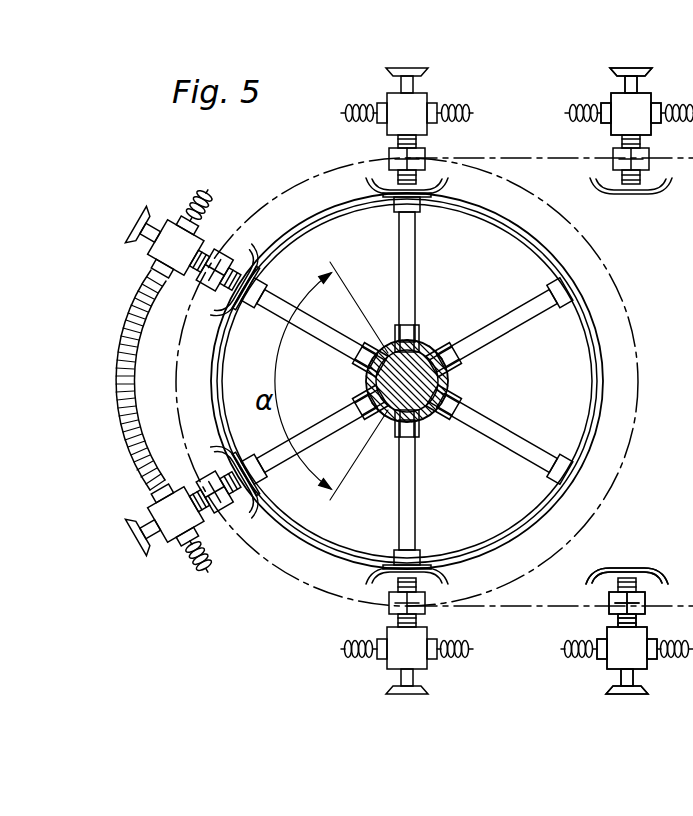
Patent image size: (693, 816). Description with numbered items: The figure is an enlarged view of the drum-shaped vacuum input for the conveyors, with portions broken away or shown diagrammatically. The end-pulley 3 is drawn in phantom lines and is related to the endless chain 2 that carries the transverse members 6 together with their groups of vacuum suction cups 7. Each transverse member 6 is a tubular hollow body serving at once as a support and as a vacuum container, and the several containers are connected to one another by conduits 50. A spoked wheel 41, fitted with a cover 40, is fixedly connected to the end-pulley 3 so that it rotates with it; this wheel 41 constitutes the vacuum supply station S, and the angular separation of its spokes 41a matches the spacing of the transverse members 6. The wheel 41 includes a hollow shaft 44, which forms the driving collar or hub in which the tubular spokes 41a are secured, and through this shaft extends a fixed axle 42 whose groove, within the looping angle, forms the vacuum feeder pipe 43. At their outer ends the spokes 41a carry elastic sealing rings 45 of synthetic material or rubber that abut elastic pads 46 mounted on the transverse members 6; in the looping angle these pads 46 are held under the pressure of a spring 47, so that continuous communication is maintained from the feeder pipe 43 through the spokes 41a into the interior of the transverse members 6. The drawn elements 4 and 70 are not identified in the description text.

The endless chain 2 is at (557, 605).
The end-pulley 3 is at (640, 362).
The adjusting nut 4 is at (640, 594).
The transverse member 6 is at (635, 103).
The vacuum suction cup 7 is at (632, 72).
The cover 40 is at (603, 391).
The spoked wheel 41 is at (535, 310).
The spoke 41a is at (405, 262).
The fixed axle 42 is at (427, 362).
The vacuum feeder pipe 43 is at (386, 380).
The hollow shaft 44 is at (447, 381).
The sealing ring 45 is at (598, 468).
The elastic pad 46 is at (622, 582).
The spring 47 is at (613, 622).
The conduit 50 is at (138, 466).
The support 70 is at (692, 297).
The vacuum supply station S is at (606, 428).